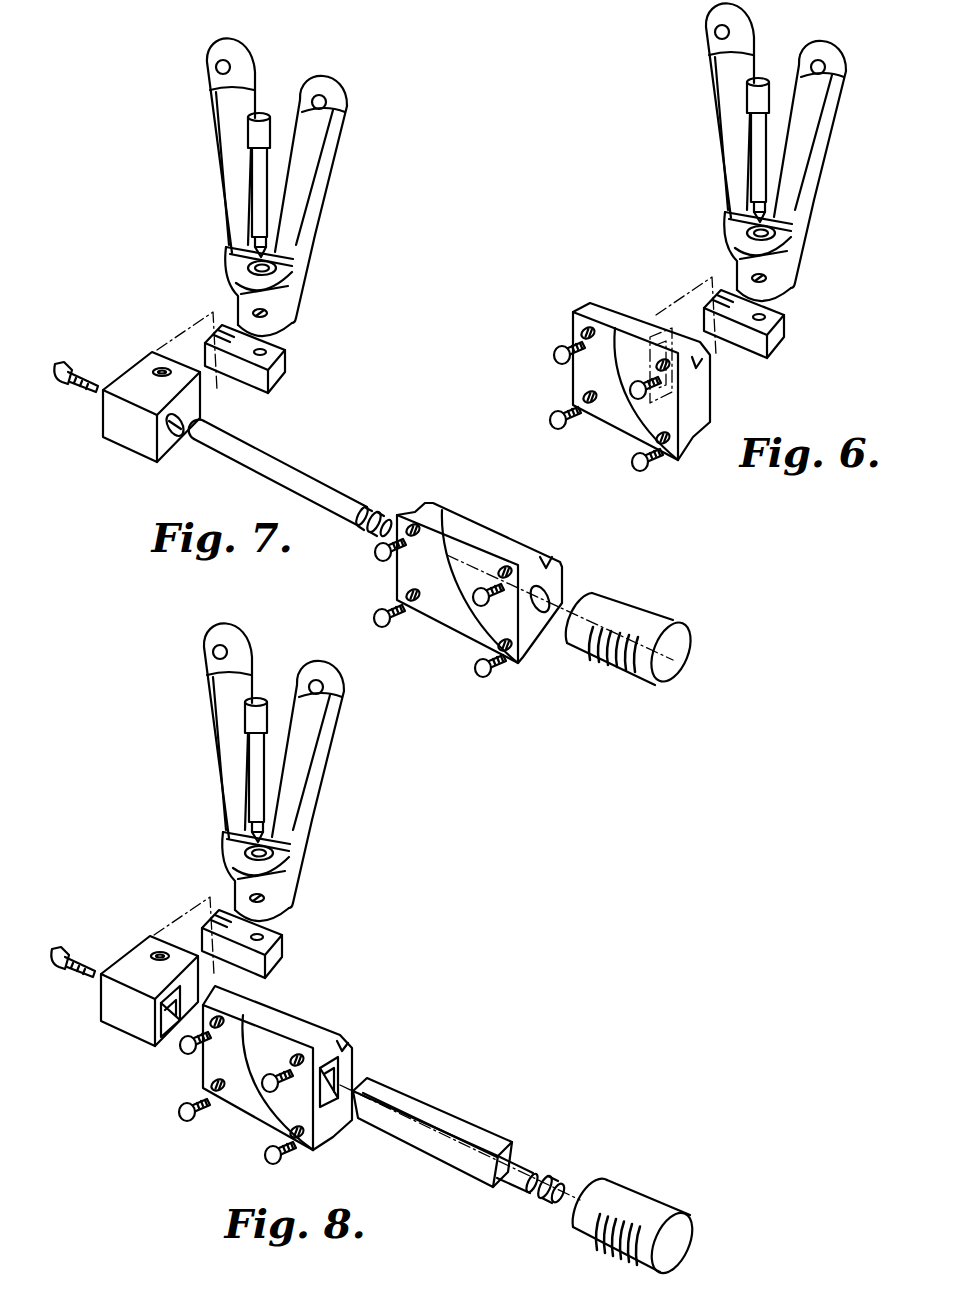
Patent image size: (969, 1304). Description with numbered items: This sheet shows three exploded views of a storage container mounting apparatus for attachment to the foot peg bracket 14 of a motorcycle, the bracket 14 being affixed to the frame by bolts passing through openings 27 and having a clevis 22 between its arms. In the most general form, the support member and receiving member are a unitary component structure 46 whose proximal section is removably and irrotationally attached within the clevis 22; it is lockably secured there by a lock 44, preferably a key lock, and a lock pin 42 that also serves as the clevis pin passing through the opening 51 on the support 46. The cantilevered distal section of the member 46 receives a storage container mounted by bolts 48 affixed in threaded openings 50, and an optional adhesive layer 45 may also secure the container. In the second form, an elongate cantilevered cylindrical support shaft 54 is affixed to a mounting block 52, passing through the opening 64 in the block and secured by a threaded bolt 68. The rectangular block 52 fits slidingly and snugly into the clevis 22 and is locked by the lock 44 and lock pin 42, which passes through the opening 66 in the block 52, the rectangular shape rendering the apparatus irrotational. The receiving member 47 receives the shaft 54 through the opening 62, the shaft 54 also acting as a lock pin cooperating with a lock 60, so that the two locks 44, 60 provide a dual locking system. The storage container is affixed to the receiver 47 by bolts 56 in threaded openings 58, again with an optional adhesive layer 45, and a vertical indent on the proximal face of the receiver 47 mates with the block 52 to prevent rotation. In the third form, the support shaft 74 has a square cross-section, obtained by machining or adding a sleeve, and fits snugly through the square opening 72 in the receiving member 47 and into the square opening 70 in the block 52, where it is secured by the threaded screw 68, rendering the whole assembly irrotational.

In FIG. 7, the foot peg bracket 14 is at (228, 150).
In FIG. 6, the foot peg bracket 14 is at (768, 143).
In FIG. 8, the foot peg bracket 14 is at (266, 763).
In FIG. 7, the clevis 22 is at (290, 276).
In FIG. 6, the clevis 22 is at (788, 245).
In FIG. 8, the clevis 22 is at (286, 865).
In FIG. 7, the openings 27 is at (215, 68).
In FIG. 6, the openings 27 is at (738, 49).
In FIG. 8, the openings 27 is at (236, 669).
In FIG. 7, the lock pin 42 is at (256, 185).
In FIG. 6, the lock pin 42 is at (716, 150).
In FIG. 8, the lock pin 42 is at (214, 770).
In FIG. 7, the lock 44 is at (274, 370).
In FIG. 6, the lock 44 is at (768, 319).
In FIG. 8, the lock 44 is at (266, 939).
In FIG. 7, the adhesive layer 45 is at (446, 548).
In FIG. 6, the adhesive layer 45 is at (614, 332).
In FIG. 8, the adhesive layer 45 is at (248, 1028).
In FIG. 6, the unitary component structure 46 is at (698, 400).
In FIG. 7, the receiving member 47 is at (545, 560).
In FIG. 8, the receiving member 47 is at (340, 1040).
In FIG. 6, the bolts 48 is at (636, 382).
In FIG. 6, the threaded openings 50 is at (582, 330).
In FIG. 6, the opening 51 is at (710, 370).
In FIG. 7, the mounting block 52 is at (143, 384).
In FIG. 8, the mounting block 52 is at (143, 956).
In FIG. 7, the support shaft 54 is at (282, 462).
In FIG. 7, the bolts 56 is at (482, 588).
In FIG. 8, the bolts 56 is at (180, 1050).
In FIG. 7, the threaded openings 58 is at (410, 522).
In FIG. 8, the threaded openings 58 is at (300, 1055).
In FIG. 7, the lock 60 is at (607, 610).
In FIG. 8, the lock 60 is at (620, 1190).
In FIG. 7, the opening 62 is at (548, 595).
In FIG. 7, the opening 64 is at (178, 438).
In FIG. 7, the opening 66 is at (160, 368).
In FIG. 8, the opening 66 is at (160, 952).
In FIG. 7, the threaded bolt 68 is at (66, 362).
In FIG. 8, the threaded bolt 68 is at (60, 947).
In FIG. 8, the square opening 70 is at (150, 1040).
In FIG. 8, the square opening 72 is at (344, 1075).
In FIG. 8, the support shaft 74 is at (445, 1110).